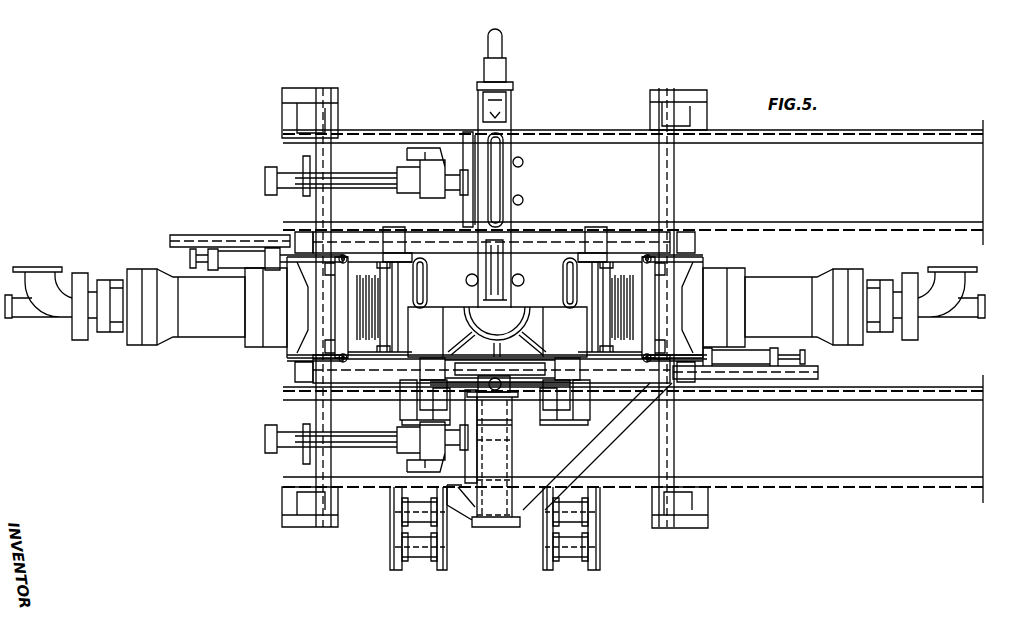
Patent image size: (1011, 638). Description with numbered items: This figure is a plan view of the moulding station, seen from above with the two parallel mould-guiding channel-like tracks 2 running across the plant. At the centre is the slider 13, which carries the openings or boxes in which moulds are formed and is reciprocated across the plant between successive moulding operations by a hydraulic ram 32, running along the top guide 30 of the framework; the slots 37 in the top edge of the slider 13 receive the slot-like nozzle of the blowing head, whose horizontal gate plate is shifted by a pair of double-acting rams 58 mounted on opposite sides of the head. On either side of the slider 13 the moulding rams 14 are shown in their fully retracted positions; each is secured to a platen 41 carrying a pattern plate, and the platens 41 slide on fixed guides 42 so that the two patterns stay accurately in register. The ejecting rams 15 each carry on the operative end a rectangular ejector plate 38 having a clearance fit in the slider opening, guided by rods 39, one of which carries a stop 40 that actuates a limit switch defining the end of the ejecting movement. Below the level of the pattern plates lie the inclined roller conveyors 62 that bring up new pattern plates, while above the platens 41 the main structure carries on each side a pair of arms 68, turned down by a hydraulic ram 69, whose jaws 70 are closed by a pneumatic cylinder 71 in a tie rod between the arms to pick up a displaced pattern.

The mould-guiding channel-like tracks 2 is at (813, 180).
The slider 13 is at (508, 222).
The moulding rams 14 is at (208, 310).
The ejecting rams 15 is at (340, 173).
The top guide 30 is at (507, 463).
The hydraulic ram 32 is at (494, 52).
The slots 37 is at (503, 179).
The ejector plate 38 is at (468, 214).
The rods 39 is at (372, 175).
The stop 40 is at (306, 163).
The platens 41 is at (393, 233).
The fixed guides 42 is at (420, 238).
The double-acting rams 58 is at (488, 366).
The inclined roller conveyors 62 is at (440, 538).
The arms 68 is at (365, 236).
The hydraulic ram 69 is at (248, 256).
The jaws 70 is at (416, 257).
The pneumatic cylinder 71 is at (400, 272).